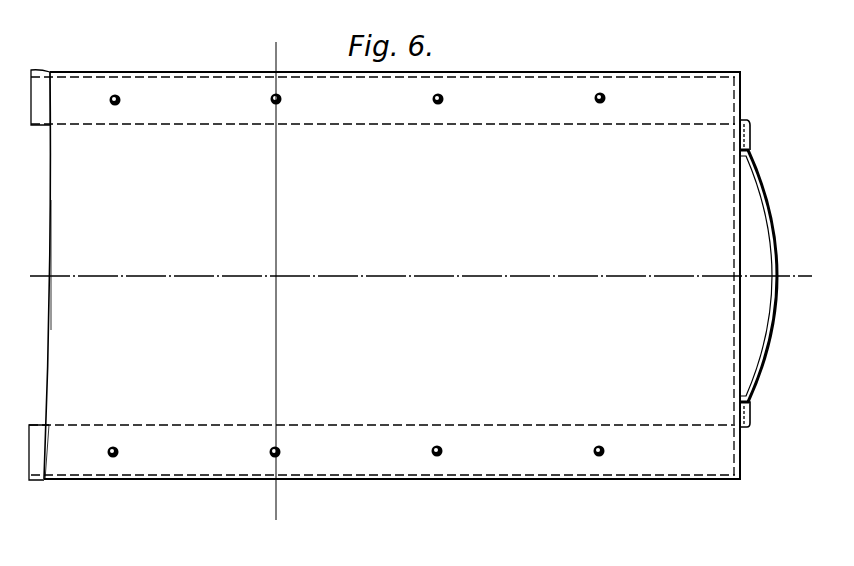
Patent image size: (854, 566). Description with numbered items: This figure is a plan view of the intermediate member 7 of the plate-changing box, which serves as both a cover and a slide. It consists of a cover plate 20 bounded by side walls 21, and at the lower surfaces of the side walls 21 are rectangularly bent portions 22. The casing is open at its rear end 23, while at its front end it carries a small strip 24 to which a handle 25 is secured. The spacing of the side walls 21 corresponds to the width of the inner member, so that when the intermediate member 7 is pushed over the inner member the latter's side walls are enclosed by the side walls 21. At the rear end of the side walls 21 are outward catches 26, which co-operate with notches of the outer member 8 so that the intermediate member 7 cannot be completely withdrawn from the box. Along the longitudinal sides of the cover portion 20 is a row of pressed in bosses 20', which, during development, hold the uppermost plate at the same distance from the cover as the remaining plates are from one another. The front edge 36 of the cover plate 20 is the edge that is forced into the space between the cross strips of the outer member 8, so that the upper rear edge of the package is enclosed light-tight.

The cover plate 20 is at (384, 275).
The pressed in bosses 20' is at (357, 273).
The side walls 21 is at (525, 72).
The rectangularly bent portions 22 is at (40, 117).
The rear end 23 is at (52, 318).
The small strip 24 is at (809, 252).
The handle 25 is at (802, 258).
The outward catches 26 is at (66, 70).
The front edge 36 is at (52, 252).
The intermediate member 7 is at (39, 254).
The outer member 8 is at (296, 54).